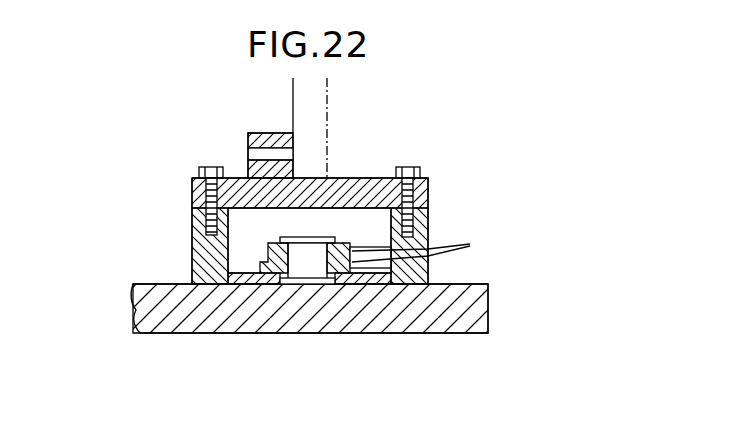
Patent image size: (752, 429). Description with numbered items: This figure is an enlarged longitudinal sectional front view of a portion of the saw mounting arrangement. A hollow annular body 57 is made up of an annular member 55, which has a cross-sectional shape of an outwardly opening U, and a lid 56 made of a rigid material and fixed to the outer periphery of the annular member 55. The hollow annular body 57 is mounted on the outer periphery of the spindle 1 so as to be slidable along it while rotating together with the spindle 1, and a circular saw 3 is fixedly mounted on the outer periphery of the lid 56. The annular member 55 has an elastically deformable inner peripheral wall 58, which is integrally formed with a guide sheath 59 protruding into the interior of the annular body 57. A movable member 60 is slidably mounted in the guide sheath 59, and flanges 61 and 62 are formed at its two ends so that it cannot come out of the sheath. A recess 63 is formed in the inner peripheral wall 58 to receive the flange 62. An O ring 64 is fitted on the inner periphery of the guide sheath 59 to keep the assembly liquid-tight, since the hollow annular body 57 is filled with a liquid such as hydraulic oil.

The spindle 1 is at (481, 296).
The circular saw 3 is at (292, 101).
The annular member 55 is at (203, 246).
The lid 56 is at (377, 186).
The hollow annular body 57 is at (433, 212).
The inner peripheral wall 58 is at (375, 284).
The guide sheath 59 is at (266, 258).
The movable member 60 is at (313, 265).
The flange 61 is at (318, 237).
The flange 62 is at (300, 284).
The recess 63 is at (336, 284).
The O ring 64 is at (427, 248).